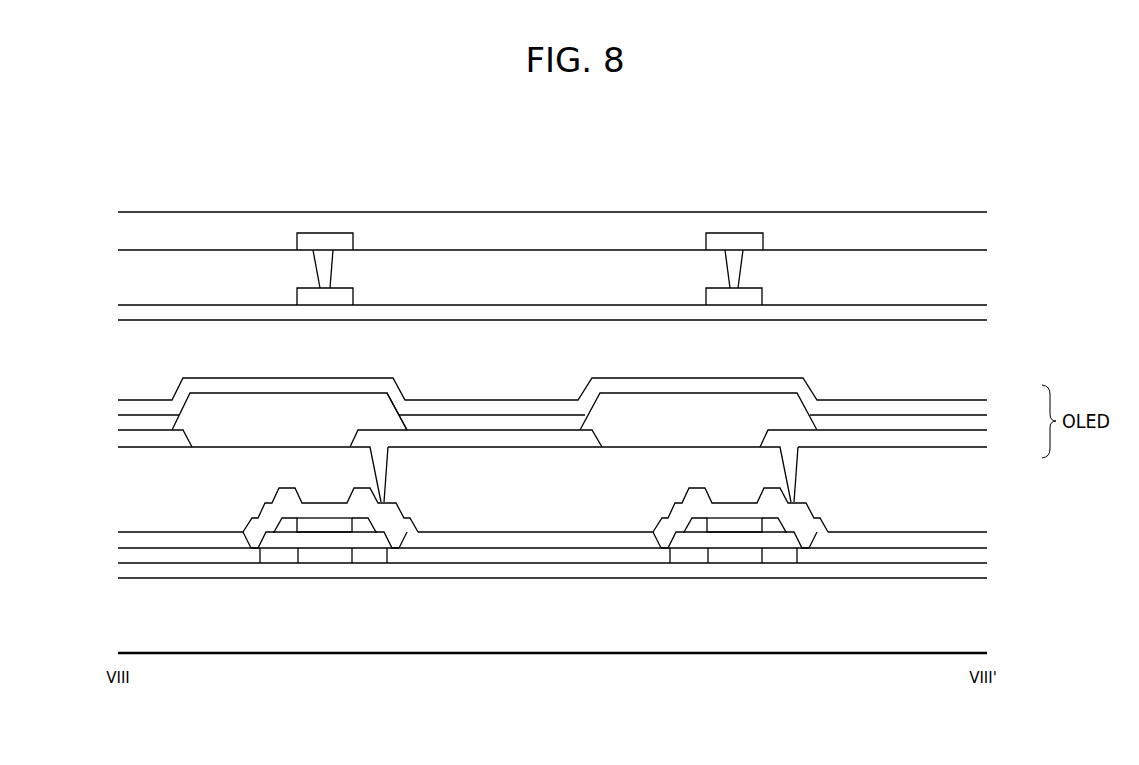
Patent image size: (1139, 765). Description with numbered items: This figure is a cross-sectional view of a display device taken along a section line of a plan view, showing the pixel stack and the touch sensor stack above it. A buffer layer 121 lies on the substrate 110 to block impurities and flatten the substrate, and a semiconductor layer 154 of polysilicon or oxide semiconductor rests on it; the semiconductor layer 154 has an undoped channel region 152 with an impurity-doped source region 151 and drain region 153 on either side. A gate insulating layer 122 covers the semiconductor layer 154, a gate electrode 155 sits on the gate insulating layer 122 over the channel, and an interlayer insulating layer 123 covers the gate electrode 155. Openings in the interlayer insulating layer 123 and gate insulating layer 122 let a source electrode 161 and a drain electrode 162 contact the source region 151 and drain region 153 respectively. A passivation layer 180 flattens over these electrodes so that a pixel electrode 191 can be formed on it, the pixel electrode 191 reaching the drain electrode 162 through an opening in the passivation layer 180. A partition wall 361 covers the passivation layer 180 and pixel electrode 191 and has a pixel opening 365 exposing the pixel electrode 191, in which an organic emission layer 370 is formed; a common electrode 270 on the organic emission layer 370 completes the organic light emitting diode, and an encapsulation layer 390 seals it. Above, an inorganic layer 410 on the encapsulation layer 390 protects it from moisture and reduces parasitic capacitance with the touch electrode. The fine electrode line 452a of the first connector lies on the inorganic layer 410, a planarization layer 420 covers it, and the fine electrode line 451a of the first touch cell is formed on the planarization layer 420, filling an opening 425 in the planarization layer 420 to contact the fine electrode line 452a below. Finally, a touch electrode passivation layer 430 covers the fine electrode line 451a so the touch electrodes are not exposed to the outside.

The substrate 110 is at (973, 621).
The buffer layer 121 is at (973, 578).
The gate insulating layer 122 is at (973, 556).
The interlayer insulating layer 123 is at (973, 535).
The source region 151 is at (283, 557).
The channel region 152 is at (330, 553).
The drain region 153 is at (366, 557).
The semiconductor layer 154 is at (529, 653).
The gate electrode 155 is at (320, 518).
The source electrode 161 is at (264, 522).
The drain electrode 162 is at (388, 522).
The passivation layer 180 is at (973, 493).
The pixel electrode 191 is at (973, 445).
The common electrode 270 is at (975, 400).
The partition wall 361 is at (203, 412).
The pixel opening 365 is at (407, 395).
The organic emission layer 370 is at (975, 423).
The encapsulation layer 390 is at (973, 357).
The inorganic layer 410 is at (973, 313).
The planarization layer 420 is at (973, 275).
The opening 425 is at (326, 233).
The touch electrode passivation layer 430 is at (973, 231).
The fine electrode line 451a is at (722, 248).
The fine electrode line 452a is at (755, 298).